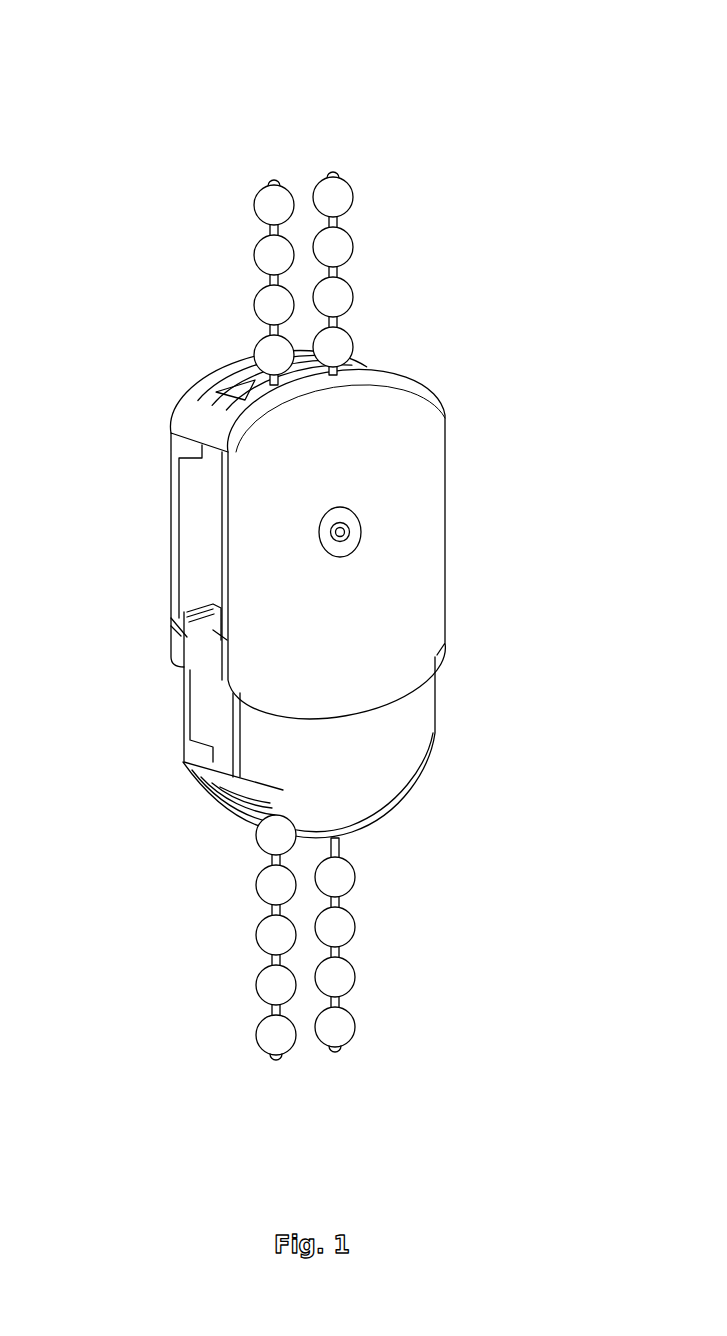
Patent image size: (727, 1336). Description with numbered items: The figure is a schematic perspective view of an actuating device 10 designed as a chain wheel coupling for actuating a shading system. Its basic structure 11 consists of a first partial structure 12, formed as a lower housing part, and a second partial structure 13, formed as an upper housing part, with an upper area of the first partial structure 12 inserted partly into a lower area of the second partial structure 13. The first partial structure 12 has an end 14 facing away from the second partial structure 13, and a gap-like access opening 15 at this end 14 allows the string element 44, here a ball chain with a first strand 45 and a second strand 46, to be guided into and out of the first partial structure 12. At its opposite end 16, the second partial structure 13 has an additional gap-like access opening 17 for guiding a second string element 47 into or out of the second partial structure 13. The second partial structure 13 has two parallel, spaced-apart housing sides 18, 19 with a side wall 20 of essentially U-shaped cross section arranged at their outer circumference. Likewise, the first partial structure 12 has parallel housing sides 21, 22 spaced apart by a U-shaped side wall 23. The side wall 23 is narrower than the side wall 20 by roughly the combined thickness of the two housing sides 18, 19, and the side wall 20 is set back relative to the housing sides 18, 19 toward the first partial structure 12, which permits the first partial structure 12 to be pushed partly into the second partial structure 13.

The actuating device 10 is at (190, 203).
The basic structure 11 is at (150, 558).
The first partial structure 12 is at (435, 738).
The second partial structure 13 is at (447, 455).
The end 14 is at (308, 1057).
The access opening 15 is at (207, 787).
The end 16 is at (300, 170).
The additional access opening 17 is at (240, 386).
The housing side 18 is at (433, 532).
The housing side 19 is at (168, 460).
The side wall 20 is at (202, 412).
The housing side 21 is at (367, 802).
The housing side 22 is at (180, 715).
The side wall 23 is at (184, 761).
The string element 44 is at (339, 952).
The first strand 45 is at (240, 962).
The second strand 46 is at (367, 1008).
The second string element 47 is at (335, 214).